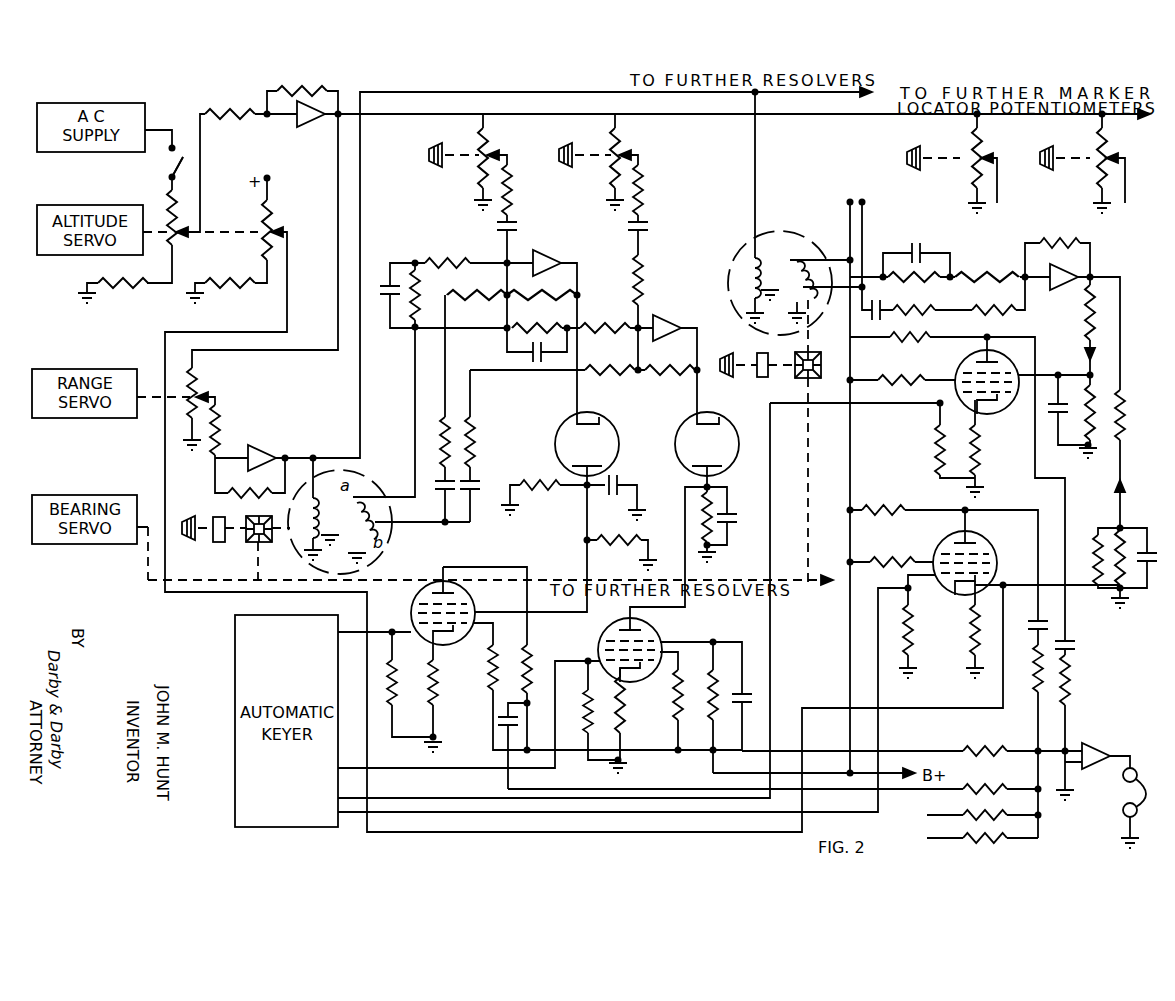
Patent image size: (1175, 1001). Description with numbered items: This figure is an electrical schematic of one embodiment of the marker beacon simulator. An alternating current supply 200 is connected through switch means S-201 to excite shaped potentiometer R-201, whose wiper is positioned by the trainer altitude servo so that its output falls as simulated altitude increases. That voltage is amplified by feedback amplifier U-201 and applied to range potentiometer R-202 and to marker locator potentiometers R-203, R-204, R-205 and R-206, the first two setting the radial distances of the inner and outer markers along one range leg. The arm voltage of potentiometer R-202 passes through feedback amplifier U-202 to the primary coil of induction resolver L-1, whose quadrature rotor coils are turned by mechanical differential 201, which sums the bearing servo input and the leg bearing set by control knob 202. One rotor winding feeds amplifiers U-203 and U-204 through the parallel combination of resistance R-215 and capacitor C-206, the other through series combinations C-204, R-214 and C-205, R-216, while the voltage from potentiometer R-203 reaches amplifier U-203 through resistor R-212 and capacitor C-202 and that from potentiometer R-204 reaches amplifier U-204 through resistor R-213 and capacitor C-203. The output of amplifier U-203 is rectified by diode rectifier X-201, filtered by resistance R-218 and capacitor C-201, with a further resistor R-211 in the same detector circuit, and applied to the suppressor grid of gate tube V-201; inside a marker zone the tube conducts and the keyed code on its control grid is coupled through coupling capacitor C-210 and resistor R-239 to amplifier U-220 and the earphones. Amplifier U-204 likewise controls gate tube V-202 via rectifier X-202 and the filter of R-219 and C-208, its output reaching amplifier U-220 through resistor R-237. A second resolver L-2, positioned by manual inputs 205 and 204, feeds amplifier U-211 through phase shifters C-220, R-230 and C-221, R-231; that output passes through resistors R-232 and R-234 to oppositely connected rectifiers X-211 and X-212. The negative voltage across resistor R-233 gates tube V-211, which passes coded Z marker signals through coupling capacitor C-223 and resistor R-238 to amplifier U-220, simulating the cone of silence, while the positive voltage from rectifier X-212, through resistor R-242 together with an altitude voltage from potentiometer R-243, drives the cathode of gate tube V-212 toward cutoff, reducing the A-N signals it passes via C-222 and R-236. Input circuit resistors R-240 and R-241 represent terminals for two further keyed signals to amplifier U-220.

The alternating current supply 200 is at (102, 86).
The switch means S-201 is at (179, 134).
The shaped potentiometer R-201 is at (164, 210).
The feedback amplifier U-201 is at (319, 123).
The potentiometer R-243 is at (276, 230).
The marker locator potentiometer R-203 is at (486, 140).
The marker locator potentiometer R-204 is at (618, 140).
The marker locator potentiometer R-205 is at (956, 155).
The marker locator potentiometer R-206 is at (1081, 155).
The resistor R-212 is at (540, 176).
The resistor R-213 is at (672, 176).
The capacitor C-202 is at (545, 222).
The capacitor C-203 is at (676, 222).
The resistance R-215 is at (432, 257).
The amplifier U-203 is at (590, 252).
The capacitor C-206 is at (386, 314).
The amplifier U-204 is at (698, 318).
The resolver L-2 is at (825, 243).
The capacitor C-220 is at (935, 243).
The resistor R-230 is at (938, 272).
The capacitor C-221 is at (881, 308).
The resistor R-231 is at (953, 310).
The amplifier U-211 is at (1068, 298).
The resistor R-232 is at (1086, 312).
The rectifier X-211 is at (1085, 349).
The manual positioning input 205 is at (740, 345).
The manual positioning input 204 is at (835, 352).
The gate tube V-211 is at (954, 370).
The resistor R-233 is at (1050, 436).
The resistor R-234 is at (1108, 440).
The rectifier X-212 is at (1111, 493).
The resistor R-242 is at (1096, 550).
The potentiometer R-202 is at (204, 390).
The feedback amplifier U-202 is at (290, 443).
The induction resolver L-1 is at (385, 478).
The capacitor C-204 is at (382, 488).
The resistor R-214 is at (467, 412).
The resistor R-216 is at (510, 436).
The capacitor C-205 is at (510, 470).
The diode rectifier X-201 is at (632, 408).
The rectifier X-202 is at (742, 408).
The resistance R-218 is at (550, 500).
The capacitor C-201 is at (640, 480).
The capacitor C-208 is at (736, 508).
The resistor R-211 is at (620, 548).
The resistor R-219 is at (710, 547).
The control knob 202 is at (194, 540).
The mechanical differential 201 is at (272, 542).
The gate tube V-212 is at (940, 543).
The pentode vacuum tube V-201 is at (410, 608).
The gate tube V-202 is at (602, 648).
The coupling capacitor C-210 is at (499, 728).
The coupling capacitor C-222 is at (1045, 615).
The coupling capacitor C-223 is at (1070, 640).
The resistor R-238 is at (1066, 660).
The resistor R-236 is at (1067, 680).
The amplifier U-220 is at (1108, 735).
The resistor R-237 is at (1010, 740).
The resistor R-239 is at (1010, 774).
The input circuit resistor R-240 is at (1010, 806).
The input circuit resistor R-241 is at (1010, 830).